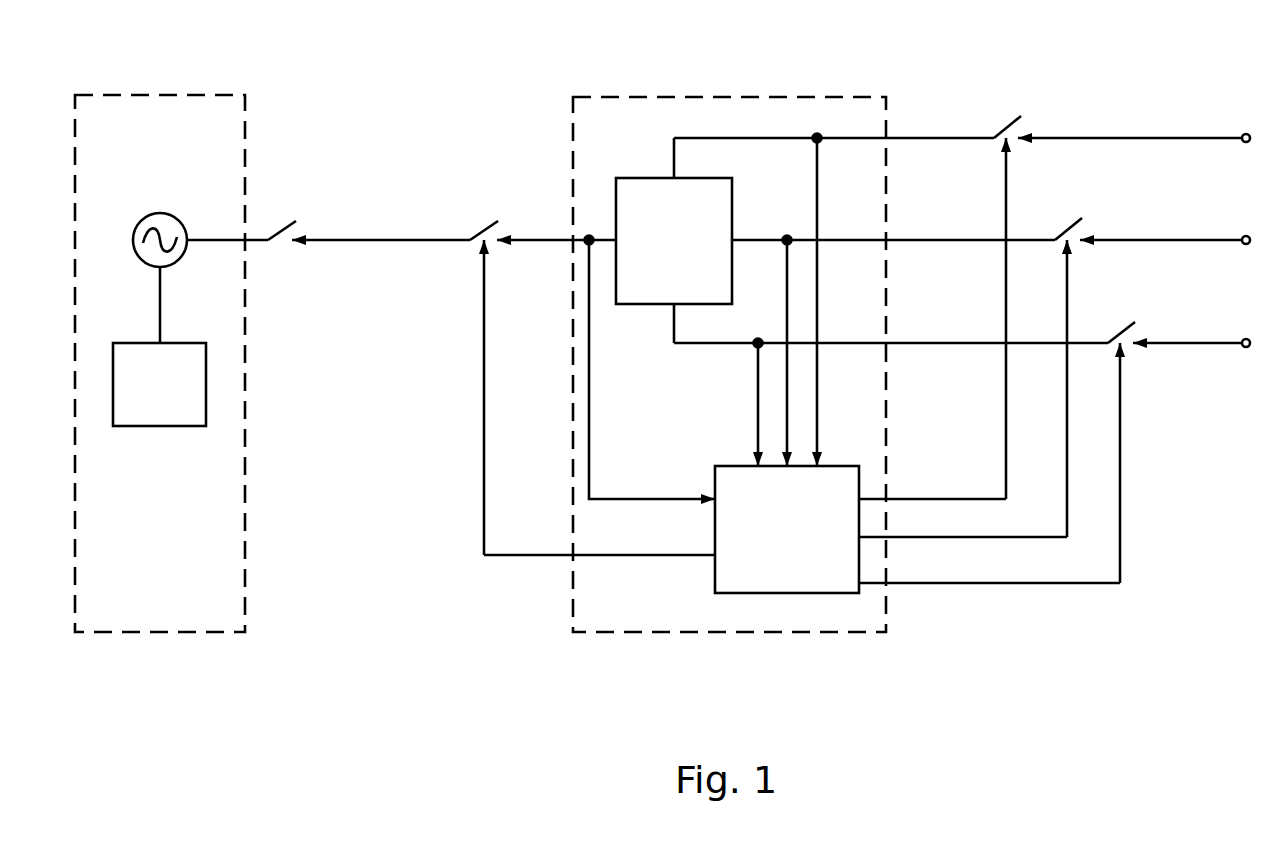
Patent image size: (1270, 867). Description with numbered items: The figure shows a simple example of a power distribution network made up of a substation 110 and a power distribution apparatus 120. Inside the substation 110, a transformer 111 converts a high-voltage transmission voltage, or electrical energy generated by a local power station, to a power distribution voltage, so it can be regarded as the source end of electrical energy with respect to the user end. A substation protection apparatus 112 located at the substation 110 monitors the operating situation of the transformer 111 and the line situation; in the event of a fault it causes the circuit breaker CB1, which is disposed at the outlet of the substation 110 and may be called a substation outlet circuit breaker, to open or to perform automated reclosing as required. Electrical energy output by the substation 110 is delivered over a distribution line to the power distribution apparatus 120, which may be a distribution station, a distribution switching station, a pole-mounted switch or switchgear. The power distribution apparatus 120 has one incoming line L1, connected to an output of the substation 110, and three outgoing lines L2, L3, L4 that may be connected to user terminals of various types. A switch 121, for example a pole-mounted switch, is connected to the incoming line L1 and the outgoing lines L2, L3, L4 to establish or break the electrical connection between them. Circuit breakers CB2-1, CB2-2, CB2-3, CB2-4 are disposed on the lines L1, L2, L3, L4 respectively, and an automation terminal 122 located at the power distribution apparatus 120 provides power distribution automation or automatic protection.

The substation 110 is at (197, 97).
The transformer 111 is at (169, 202).
The substation protection apparatus 112 is at (182, 402).
The power distribution apparatus 120 is at (763, 95).
The switch 121 is at (699, 258).
The automation terminal 122 is at (812, 546).
The circuit breaker CB1 is at (288, 214).
The circuit breaker CB2-1 is at (485, 215).
The circuit breaker CB2-2 is at (1008, 120).
The circuit breaker CB2-3 is at (1069, 219).
The circuit breaker CB2-4 is at (1123, 326).
The incoming line L1 is at (523, 232).
The outgoing line L2 is at (913, 125).
The outgoing line L3 is at (915, 226).
The outgoing line L4 is at (922, 330).